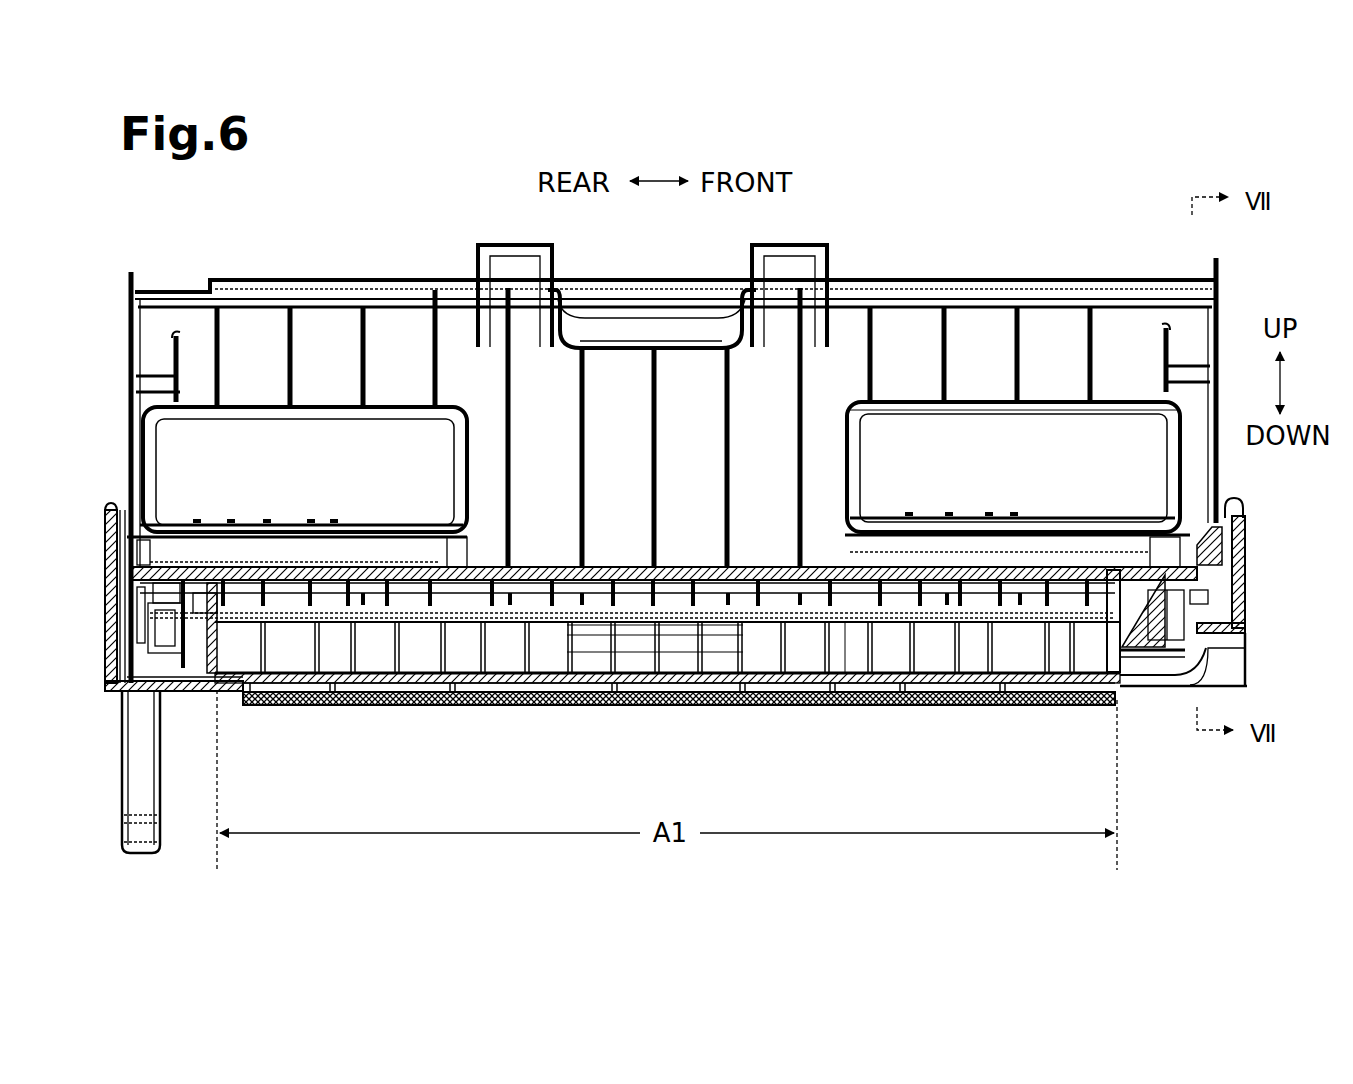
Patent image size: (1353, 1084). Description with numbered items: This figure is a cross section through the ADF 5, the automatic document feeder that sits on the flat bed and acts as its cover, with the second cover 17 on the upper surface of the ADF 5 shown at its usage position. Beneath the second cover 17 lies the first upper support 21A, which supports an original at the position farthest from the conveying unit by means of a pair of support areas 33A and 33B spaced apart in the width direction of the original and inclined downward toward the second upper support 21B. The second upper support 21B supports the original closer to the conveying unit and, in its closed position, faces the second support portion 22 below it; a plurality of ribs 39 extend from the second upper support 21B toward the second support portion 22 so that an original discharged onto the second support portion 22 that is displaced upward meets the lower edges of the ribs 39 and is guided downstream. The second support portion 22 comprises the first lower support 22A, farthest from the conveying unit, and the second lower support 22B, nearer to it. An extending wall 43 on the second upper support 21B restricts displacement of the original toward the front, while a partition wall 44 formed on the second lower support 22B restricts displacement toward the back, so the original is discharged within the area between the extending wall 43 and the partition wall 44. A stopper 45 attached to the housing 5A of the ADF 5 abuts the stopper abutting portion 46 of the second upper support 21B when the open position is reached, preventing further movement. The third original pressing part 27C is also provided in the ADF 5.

The ADF 5 is at (436, 249).
The housing 5A is at (1248, 585).
The second cover 17 is at (1132, 268).
The first upper support 21A is at (245, 435).
The second upper support 21B is at (608, 560).
The second support portion 22 is at (470, 650).
The first lower support 22A is at (898, 348).
The second lower support 22B is at (805, 650).
The third original pressing part 27C is at (895, 706).
The support area 33A is at (985, 430).
The support area 33B is at (320, 435).
The ribs 39 is at (567, 635).
The extending wall 43 is at (1122, 655).
The partition wall 44 is at (205, 665).
The stopper 45 is at (1242, 505).
The stopper abutting portion 46 is at (1225, 540).